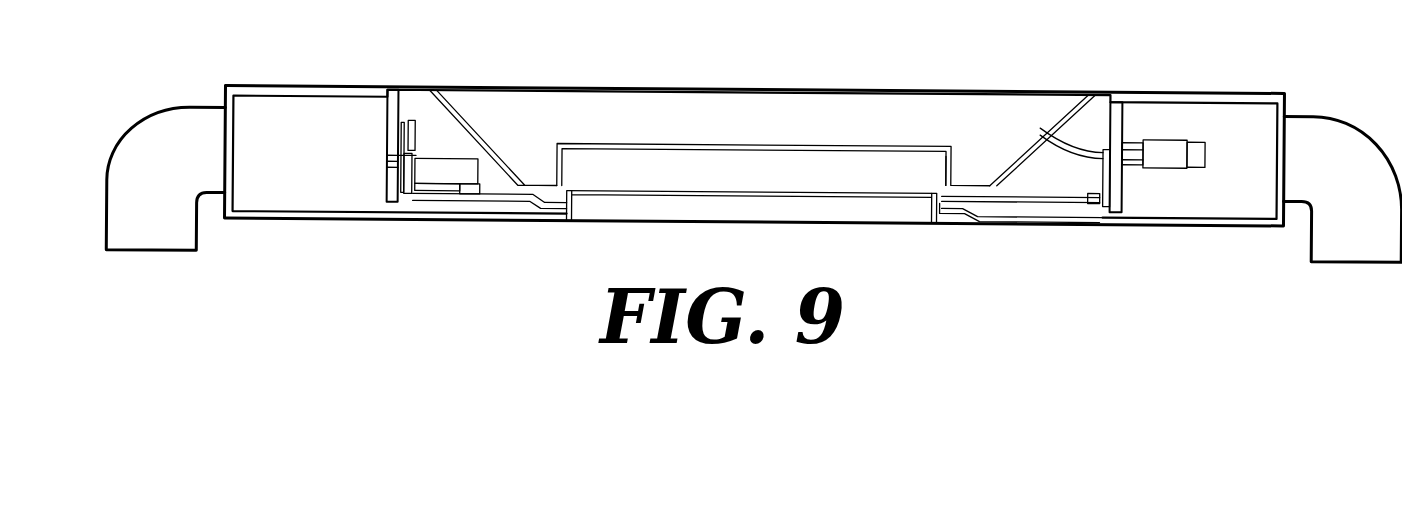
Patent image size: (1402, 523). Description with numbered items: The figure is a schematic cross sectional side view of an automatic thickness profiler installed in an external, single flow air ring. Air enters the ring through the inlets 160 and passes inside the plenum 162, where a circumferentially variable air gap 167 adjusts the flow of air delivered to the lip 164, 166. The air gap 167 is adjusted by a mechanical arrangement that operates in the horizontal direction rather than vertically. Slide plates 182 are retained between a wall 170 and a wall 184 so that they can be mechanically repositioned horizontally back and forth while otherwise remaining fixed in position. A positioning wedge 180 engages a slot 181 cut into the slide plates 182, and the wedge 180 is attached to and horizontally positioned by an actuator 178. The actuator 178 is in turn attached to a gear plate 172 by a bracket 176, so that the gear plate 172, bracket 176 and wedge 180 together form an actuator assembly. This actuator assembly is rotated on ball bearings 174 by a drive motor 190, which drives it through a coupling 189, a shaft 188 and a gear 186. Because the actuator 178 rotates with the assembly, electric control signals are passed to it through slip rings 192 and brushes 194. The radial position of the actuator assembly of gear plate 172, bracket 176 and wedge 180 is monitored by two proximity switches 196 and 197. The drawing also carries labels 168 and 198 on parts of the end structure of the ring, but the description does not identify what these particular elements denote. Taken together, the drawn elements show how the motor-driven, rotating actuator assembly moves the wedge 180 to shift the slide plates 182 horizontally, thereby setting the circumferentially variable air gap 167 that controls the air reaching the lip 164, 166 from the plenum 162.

The inlets 160 is at (158, 125).
The plenum 162 is at (322, 91).
The lip 164 is at (940, 223).
The lip 166 is at (944, 165).
The circumferentially variable air gap 167 is at (570, 182).
The end block 168 is at (386, 145).
The wall 170 is at (440, 209).
The gear plate 172 is at (1116, 212).
The ball bearings 174 is at (404, 205).
The bracket 176 is at (420, 160).
The actuator 178 is at (418, 163).
The positioning wedge 180 is at (494, 200).
The slot 181 is at (1028, 205).
The slide plates 182 is at (560, 207).
The wall 184 is at (1080, 205).
The gear 186 is at (1103, 148).
The shaft 188 is at (1068, 116).
The coupling 189 is at (1128, 143).
The drive motor 190 is at (1206, 150).
The slip rings 192 is at (386, 173).
The brushes 194 is at (1035, 142).
The proximity switch 196 is at (404, 127).
The proximity switch 197 is at (414, 126).
The diagonal support 198 is at (432, 128).